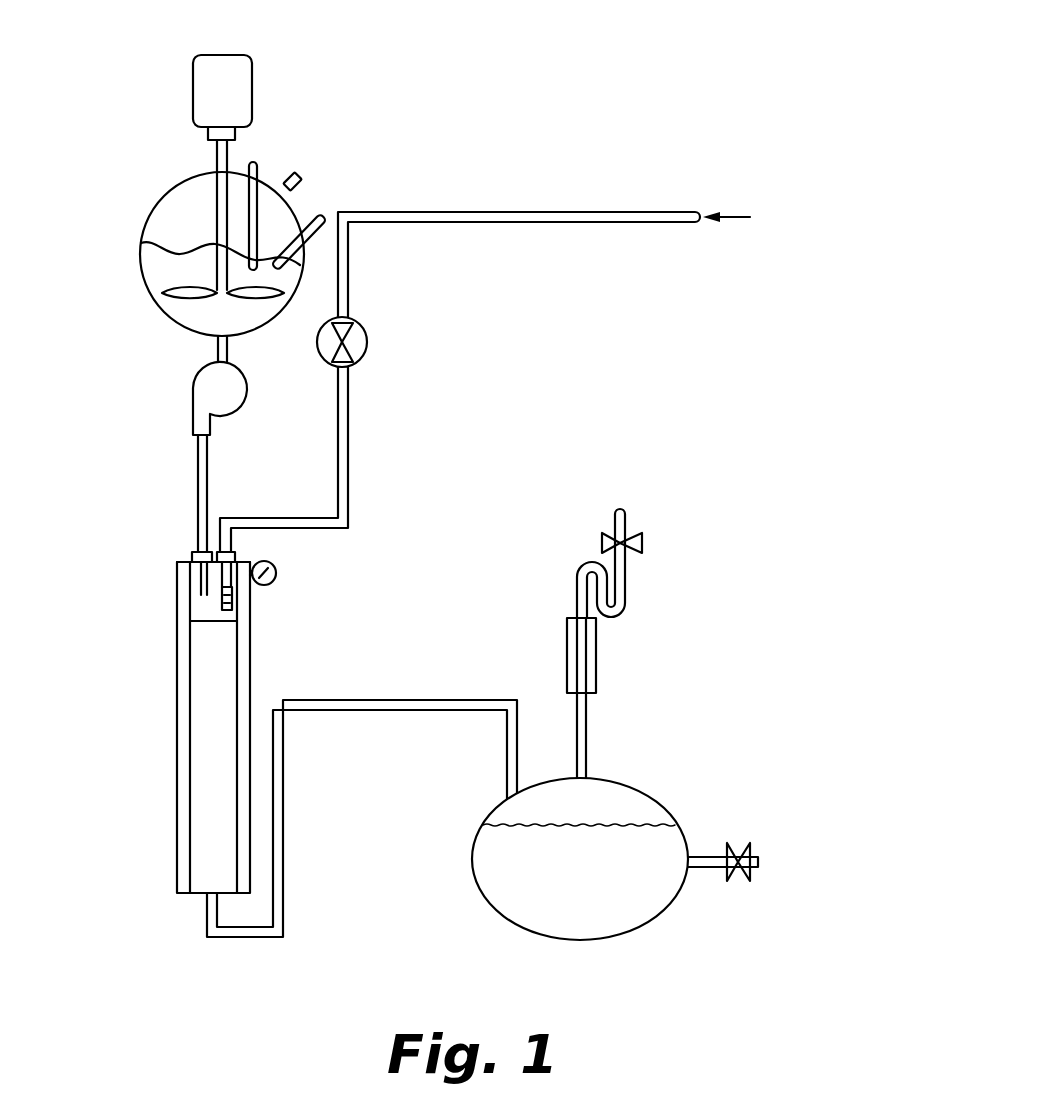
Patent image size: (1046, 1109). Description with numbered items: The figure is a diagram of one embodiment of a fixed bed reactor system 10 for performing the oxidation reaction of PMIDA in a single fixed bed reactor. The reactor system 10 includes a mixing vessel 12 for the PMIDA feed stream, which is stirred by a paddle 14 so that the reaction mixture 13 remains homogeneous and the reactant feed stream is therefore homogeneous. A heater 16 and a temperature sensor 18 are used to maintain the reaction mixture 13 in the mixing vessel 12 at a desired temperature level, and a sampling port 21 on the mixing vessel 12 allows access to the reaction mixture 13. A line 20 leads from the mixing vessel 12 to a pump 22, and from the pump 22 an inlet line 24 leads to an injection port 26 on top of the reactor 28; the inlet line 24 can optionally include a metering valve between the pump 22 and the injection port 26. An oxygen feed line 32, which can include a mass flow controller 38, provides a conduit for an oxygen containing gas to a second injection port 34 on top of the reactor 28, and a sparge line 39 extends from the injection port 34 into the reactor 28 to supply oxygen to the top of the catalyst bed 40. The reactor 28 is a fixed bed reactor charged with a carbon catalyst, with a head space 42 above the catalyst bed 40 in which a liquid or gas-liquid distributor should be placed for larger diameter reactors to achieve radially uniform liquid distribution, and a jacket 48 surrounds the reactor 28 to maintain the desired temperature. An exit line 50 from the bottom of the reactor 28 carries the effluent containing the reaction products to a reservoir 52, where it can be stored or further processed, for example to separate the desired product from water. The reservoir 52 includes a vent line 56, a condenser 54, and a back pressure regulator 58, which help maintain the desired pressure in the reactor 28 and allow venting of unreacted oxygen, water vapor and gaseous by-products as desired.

The reactor system 10 is at (424, 252).
The mixing vessel 12 is at (206, 238).
The reaction mixture 13 is at (191, 229).
The paddle 14 is at (196, 325).
The heater 16 is at (279, 177).
The temperature sensor 18 is at (327, 213).
The line 20 is at (169, 377).
The sampling port 21 is at (332, 138).
The pump 22 is at (241, 391).
The inlet line 24 is at (158, 515).
The injection port 26 is at (177, 535).
The reactor 28 is at (180, 576).
The oxygen feed line 32 is at (567, 231).
The injection port 34 is at (283, 488).
The mass flow controller 38 is at (385, 341).
The sparge line 39 is at (264, 621).
The catalyst bed 40 is at (185, 727).
The head space 42 is at (172, 634).
The jacket 48 is at (171, 727).
The exit line 50 is at (362, 858).
The reservoir 52 is at (615, 822).
The condenser 54 is at (623, 655).
The vent line 56 is at (551, 643).
The back pressure regulator 58 is at (659, 531).